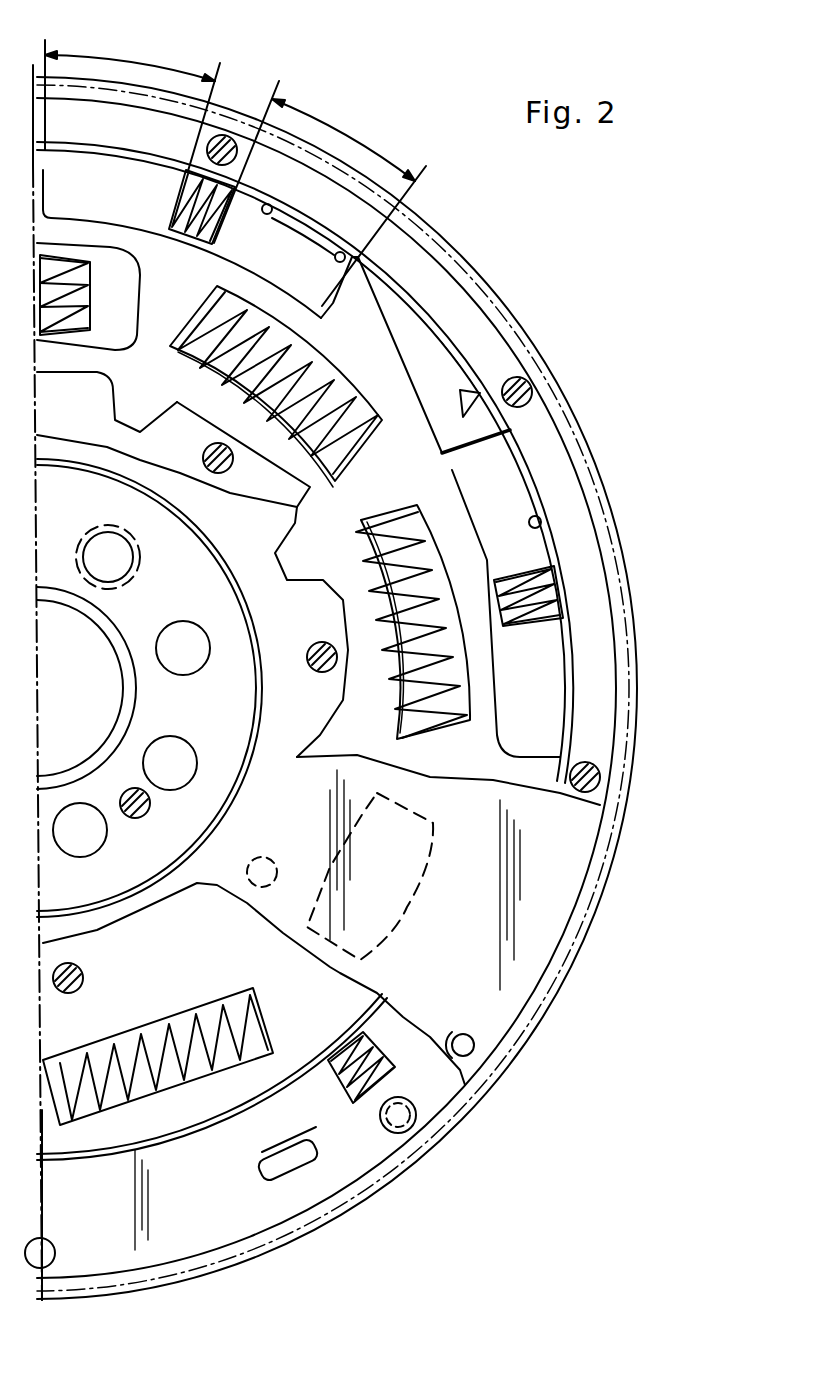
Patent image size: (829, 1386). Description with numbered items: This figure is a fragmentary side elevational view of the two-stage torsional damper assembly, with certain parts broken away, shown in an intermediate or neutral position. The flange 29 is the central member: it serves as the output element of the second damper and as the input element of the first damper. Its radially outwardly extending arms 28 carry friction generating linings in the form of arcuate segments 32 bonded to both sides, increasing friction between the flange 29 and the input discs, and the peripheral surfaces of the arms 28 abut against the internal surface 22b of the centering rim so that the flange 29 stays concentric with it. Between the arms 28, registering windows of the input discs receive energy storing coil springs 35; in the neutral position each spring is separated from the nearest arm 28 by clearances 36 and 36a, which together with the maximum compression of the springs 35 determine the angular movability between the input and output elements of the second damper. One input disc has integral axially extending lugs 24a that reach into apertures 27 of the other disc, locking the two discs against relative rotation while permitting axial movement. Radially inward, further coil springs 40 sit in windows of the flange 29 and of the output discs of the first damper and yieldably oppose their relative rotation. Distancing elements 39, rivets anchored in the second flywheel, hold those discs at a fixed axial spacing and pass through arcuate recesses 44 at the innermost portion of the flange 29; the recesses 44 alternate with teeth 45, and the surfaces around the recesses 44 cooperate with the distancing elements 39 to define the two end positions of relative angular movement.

The internal surface 22b is at (541, 524).
The lugs 24a is at (303, 228).
The apertures 27 is at (270, 1188).
The radially outwardly extending arm 28 is at (335, 288).
The flange 29 is at (420, 458).
The arcuate segments 32 is at (408, 335).
The coil springs 35 is at (172, 200).
The clearance 36 is at (134, 60).
The clearance 36a is at (350, 137).
The distancing elements 39 is at (205, 456).
The coil springs 40 is at (207, 1080).
The arcuate recesses 44 is at (285, 527).
The teeth 45 is at (332, 566).